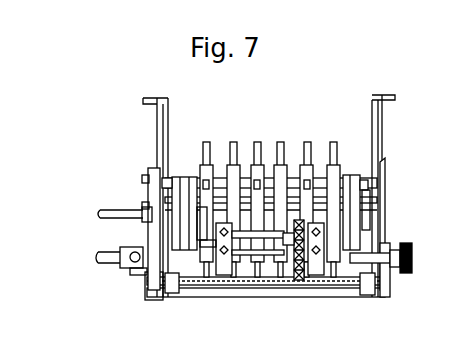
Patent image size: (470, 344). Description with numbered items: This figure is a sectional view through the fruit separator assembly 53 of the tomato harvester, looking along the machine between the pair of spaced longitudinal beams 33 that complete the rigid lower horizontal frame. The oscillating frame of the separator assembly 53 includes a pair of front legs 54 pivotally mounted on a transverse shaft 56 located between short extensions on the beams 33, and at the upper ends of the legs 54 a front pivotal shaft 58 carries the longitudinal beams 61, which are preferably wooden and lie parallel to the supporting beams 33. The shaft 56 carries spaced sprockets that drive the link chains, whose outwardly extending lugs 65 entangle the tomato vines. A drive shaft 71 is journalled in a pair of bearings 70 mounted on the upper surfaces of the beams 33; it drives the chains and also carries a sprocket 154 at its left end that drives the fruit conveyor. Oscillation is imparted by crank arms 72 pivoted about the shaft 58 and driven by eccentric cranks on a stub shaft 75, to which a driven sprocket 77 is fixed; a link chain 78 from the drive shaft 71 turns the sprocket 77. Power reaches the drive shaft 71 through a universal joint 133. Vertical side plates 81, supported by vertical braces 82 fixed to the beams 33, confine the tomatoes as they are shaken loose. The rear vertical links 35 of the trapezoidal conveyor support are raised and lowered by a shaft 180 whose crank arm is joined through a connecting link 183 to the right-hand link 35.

The longitudinal beams 33 is at (172, 293).
The rear vertical links 35 is at (150, 170).
The fruit separator assembly 53 is at (290, 134).
The front legs 54 is at (160, 214).
The transverse shaft 56 is at (368, 236).
The front pivotal shaft 58 is at (221, 180).
The longitudinal beams 61 is at (180, 176).
The lugs 65 is at (333, 142).
The bearings 70 is at (150, 274).
The drive shaft 71 is at (270, 255).
The crank arms 72 is at (197, 226).
The stub shaft 75 is at (228, 262).
The driven sprocket 77 is at (292, 262).
The link chain 78 is at (317, 262).
The vertical side plates 81 is at (148, 99).
The vertical braces 82 is at (157, 129).
The second universal joint 133 is at (130, 266).
The sprocket 154 is at (413, 259).
The shaft 180 is at (99, 214).
The connecting link 183 is at (147, 183).